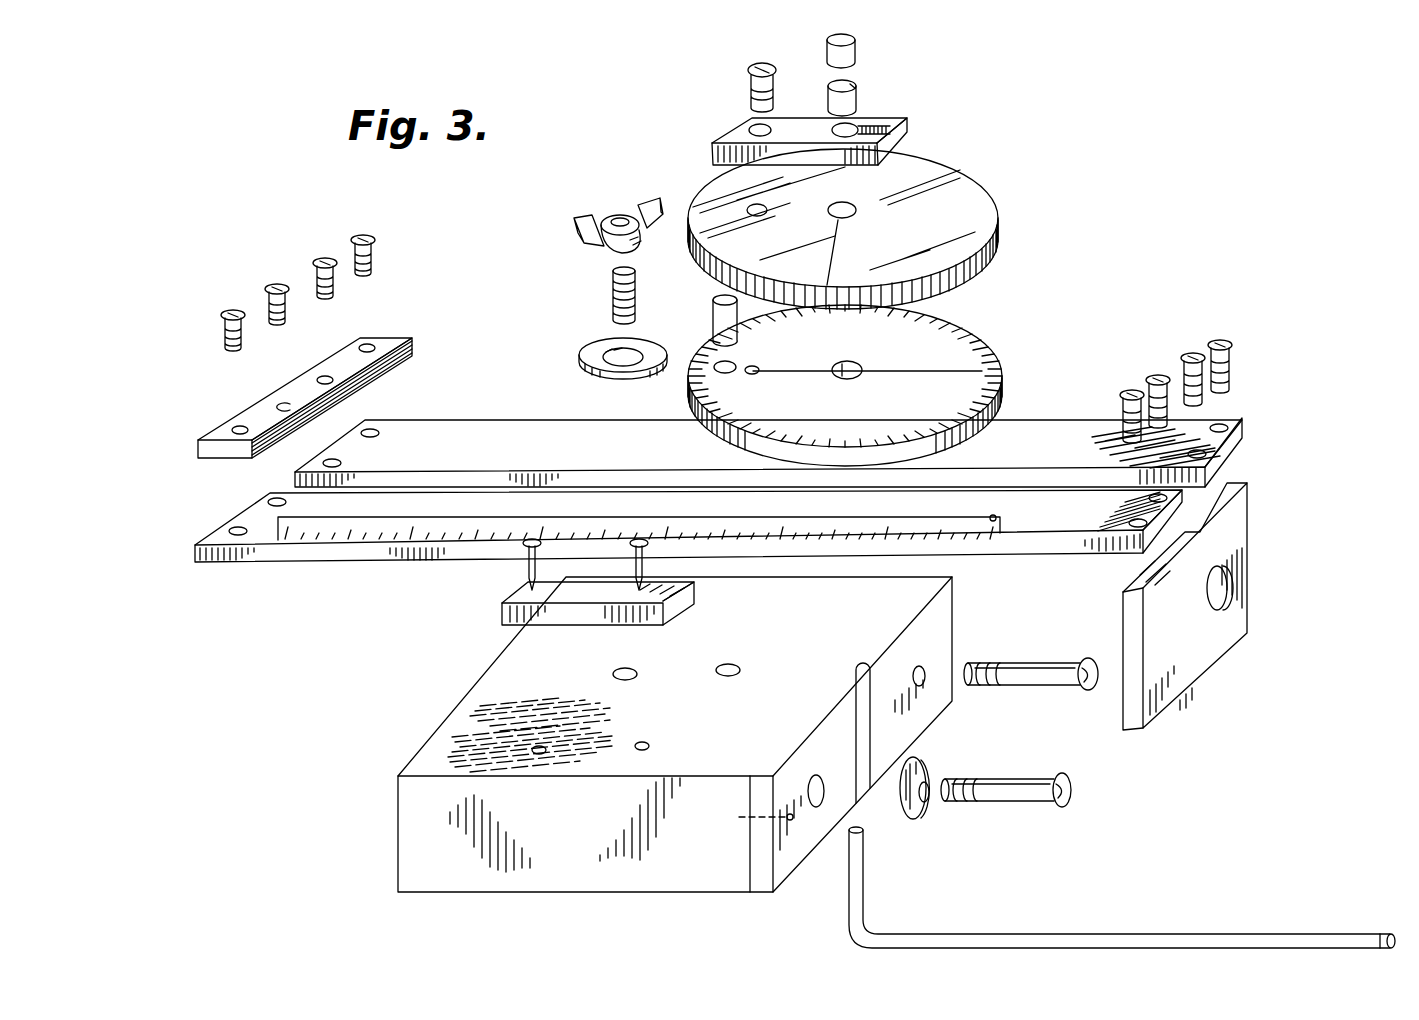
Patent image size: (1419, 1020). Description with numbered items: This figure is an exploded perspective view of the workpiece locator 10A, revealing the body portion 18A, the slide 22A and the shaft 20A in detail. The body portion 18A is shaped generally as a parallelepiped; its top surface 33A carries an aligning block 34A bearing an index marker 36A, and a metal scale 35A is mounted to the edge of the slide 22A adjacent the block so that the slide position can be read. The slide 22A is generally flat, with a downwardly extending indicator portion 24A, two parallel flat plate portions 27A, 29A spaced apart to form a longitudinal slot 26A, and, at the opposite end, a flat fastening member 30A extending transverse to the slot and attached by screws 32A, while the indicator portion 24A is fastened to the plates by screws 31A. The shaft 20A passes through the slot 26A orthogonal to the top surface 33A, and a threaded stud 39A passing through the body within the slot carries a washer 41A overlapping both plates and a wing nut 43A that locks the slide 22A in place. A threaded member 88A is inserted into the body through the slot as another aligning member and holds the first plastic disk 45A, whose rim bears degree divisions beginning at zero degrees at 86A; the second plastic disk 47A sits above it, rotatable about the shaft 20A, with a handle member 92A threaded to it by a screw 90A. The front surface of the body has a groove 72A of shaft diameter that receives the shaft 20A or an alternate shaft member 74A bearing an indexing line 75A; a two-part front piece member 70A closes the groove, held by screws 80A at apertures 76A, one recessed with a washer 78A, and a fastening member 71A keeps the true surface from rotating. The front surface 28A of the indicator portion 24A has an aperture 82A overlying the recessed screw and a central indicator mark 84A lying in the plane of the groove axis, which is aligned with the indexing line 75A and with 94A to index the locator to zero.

The workpiece locator 10A is at (1140, 212).
The body portion 18A is at (410, 827).
The shaft 20A is at (857, 92).
The slide 22A is at (272, 474).
The indicator portion 24A is at (1243, 685).
The slot 26A is at (537, 447).
The flat plate portion 27A is at (1075, 392).
The front surface 28A is at (1247, 603).
The flat plate portion 29A is at (1096, 540).
The fastening member 30A is at (227, 420).
The screws 31A is at (1220, 343).
The screws 32A is at (353, 237).
The top surface 33A is at (463, 732).
The aligning block 34A is at (687, 605).
The metal scale 35A is at (989, 507).
The index marker 36A is at (594, 593).
The threaded stud 39A is at (612, 290).
The washer 41A is at (583, 346).
The wing nut 43A is at (607, 183).
The first plastic disk 45A is at (983, 323).
The second plastic disk 47A is at (963, 183).
The front piece member 70A is at (760, 770).
The fastening member 71A is at (756, 836).
The groove 72A is at (854, 667).
The alternate shaft member 74A is at (1061, 892).
The indexing line 75A is at (1189, 929).
The aperture 76A is at (919, 679).
The washer 78A is at (927, 807).
The screws 80A is at (1066, 632).
The aperture 82A is at (1225, 575).
The indicator mark 84A is at (1195, 652).
The zero degree division 86A is at (693, 370).
The threaded member 88A is at (711, 302).
The screw 90A is at (745, 92).
The handle member 92A is at (893, 120).
The center hole 94A is at (838, 252).